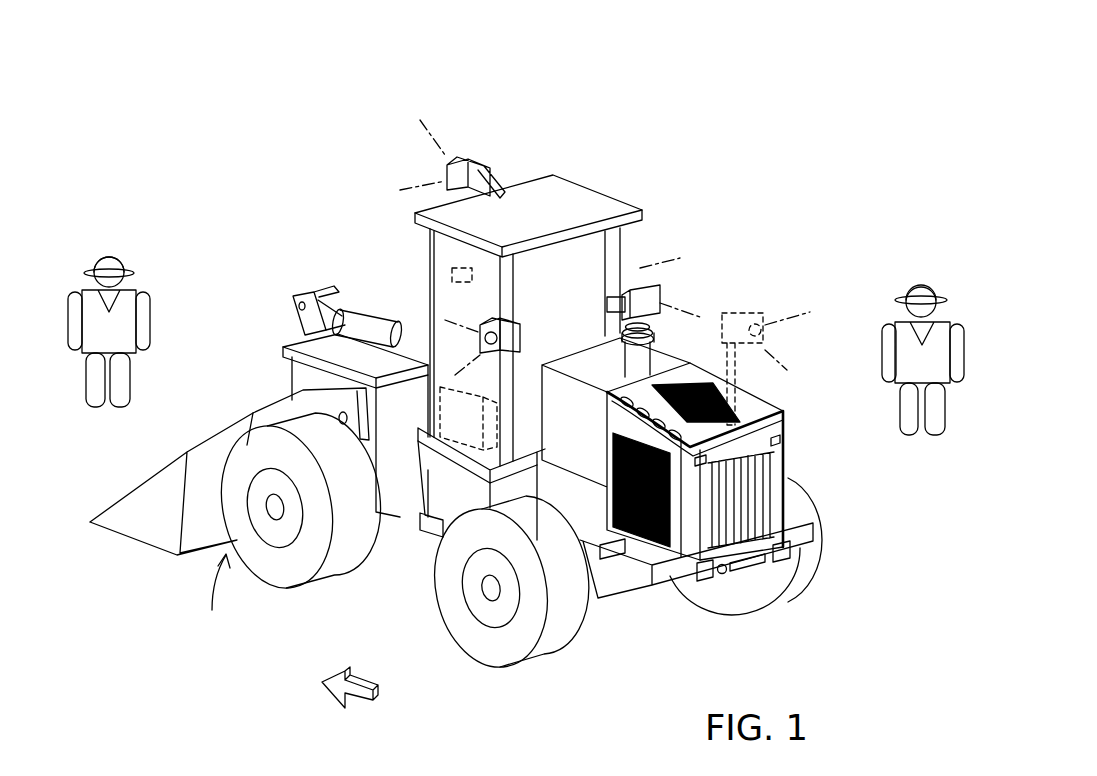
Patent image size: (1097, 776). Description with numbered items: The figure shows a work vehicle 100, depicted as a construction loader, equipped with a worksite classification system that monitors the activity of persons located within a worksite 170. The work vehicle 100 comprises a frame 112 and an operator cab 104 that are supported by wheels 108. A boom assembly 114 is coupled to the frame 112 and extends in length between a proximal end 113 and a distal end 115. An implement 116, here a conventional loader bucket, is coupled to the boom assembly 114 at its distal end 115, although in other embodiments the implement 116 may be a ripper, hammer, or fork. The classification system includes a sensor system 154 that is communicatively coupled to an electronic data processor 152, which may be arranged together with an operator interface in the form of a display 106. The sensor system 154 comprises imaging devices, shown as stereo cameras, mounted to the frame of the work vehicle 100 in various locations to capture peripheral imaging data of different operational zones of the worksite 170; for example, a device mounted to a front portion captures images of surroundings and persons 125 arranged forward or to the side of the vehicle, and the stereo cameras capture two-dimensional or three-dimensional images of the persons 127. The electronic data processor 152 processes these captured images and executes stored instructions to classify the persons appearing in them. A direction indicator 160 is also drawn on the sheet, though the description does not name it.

The work vehicle 100 is at (343, 68).
The operator cab 104 is at (613, 253).
The display 106 is at (458, 266).
The wheels 108 is at (350, 545).
The frame 112 is at (633, 585).
The proximal end 113 is at (352, 275).
The boom assembly 114 is at (257, 380).
The distal end 115 is at (235, 601).
The implement 116 is at (160, 505).
The persons 125 is at (111, 262).
The persons 127 is at (68, 243).
The electronic data processor 152 is at (497, 423).
The sensor system 154 is at (466, 165).
The travel direction 160 is at (358, 702).
The worksite 170 is at (783, 89).